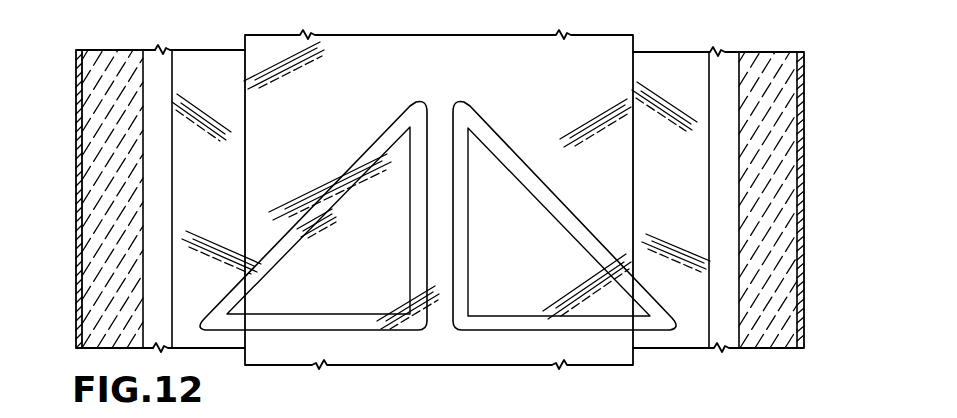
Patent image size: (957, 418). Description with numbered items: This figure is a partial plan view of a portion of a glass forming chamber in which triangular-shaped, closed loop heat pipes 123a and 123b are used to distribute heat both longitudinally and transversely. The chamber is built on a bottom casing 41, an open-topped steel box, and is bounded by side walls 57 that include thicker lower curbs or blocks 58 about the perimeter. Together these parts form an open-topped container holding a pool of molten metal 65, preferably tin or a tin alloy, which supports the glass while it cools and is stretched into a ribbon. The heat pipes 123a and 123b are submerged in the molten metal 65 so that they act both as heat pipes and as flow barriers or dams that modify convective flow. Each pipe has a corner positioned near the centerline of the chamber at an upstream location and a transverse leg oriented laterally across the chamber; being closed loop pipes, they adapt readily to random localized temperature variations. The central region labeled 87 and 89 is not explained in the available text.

The bottom casing 41 is at (804, 103).
The side walls 57 is at (110, 60).
The lower curbs or blocks 58 is at (723, 58).
The pool of molten metal 65 is at (212, 60).
The central plate 87 is at (438, 199).
The central plate (alternate) 89 is at (476, 73).
The triangular-shaped closed loop heat pipe 123a is at (397, 332).
The triangular-shaped closed loop heat pipe 123b is at (497, 332).